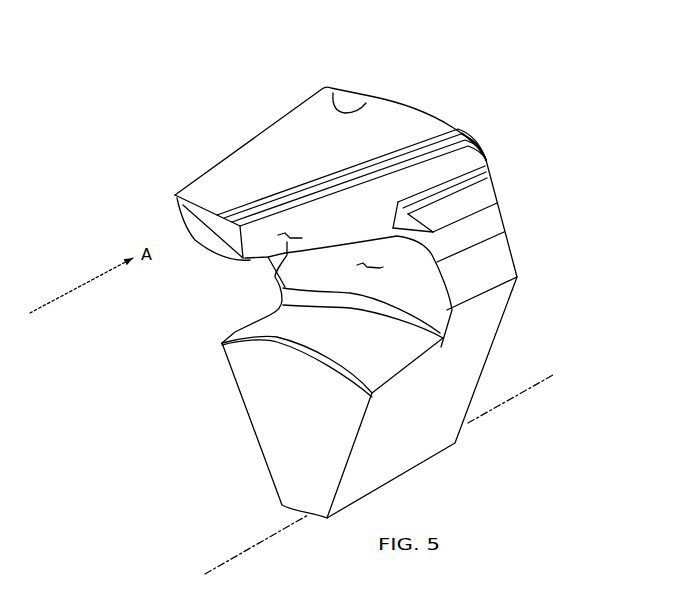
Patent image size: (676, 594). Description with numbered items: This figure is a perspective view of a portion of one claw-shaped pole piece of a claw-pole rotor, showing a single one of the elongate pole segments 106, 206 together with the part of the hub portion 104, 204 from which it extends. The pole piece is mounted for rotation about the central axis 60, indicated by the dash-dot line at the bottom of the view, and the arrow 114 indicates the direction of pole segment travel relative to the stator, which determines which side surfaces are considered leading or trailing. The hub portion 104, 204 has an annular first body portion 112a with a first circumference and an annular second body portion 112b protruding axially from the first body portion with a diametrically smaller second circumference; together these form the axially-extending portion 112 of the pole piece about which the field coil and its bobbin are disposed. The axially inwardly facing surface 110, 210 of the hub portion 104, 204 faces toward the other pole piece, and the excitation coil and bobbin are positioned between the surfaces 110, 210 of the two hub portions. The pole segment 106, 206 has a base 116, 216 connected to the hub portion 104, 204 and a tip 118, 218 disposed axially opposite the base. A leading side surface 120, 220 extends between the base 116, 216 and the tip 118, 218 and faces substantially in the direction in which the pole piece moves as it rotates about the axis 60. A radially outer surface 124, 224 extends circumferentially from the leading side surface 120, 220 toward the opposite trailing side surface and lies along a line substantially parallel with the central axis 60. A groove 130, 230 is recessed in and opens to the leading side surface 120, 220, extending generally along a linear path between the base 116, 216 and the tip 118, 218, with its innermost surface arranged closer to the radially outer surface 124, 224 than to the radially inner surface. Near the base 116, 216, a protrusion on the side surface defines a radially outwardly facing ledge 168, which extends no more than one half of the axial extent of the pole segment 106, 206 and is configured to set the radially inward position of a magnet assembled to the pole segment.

The hub portion 104 is at (427, 339).
The hub portion 204 is at (510, 311).
The pole segment 106 is at (330, 139).
The pole segment 206 is at (262, 100).
The axially inwardly facing surface 110 is at (419, 277).
The axially inwardly facing surface 210 is at (432, 258).
The axially-extending portion 112 is at (235, 385).
The first body portion 112a is at (397, 107).
The second body portion 112b is at (275, 432).
The arrow 114 is at (276, 573).
The base 116 is at (529, 138).
The base 216 is at (478, 147).
The tip 118 is at (173, 215).
The tip 218 is at (177, 200).
The leading side surface 120 is at (304, 297).
The leading side surface 220 is at (287, 257).
The radially outer surface 124 is at (366, 61).
The radially outer surface 224 is at (346, 107).
The groove 130 is at (378, 147).
The groove 230 is at (471, 127).
The ledge 168 is at (488, 169).
The axis 60 is at (221, 565).